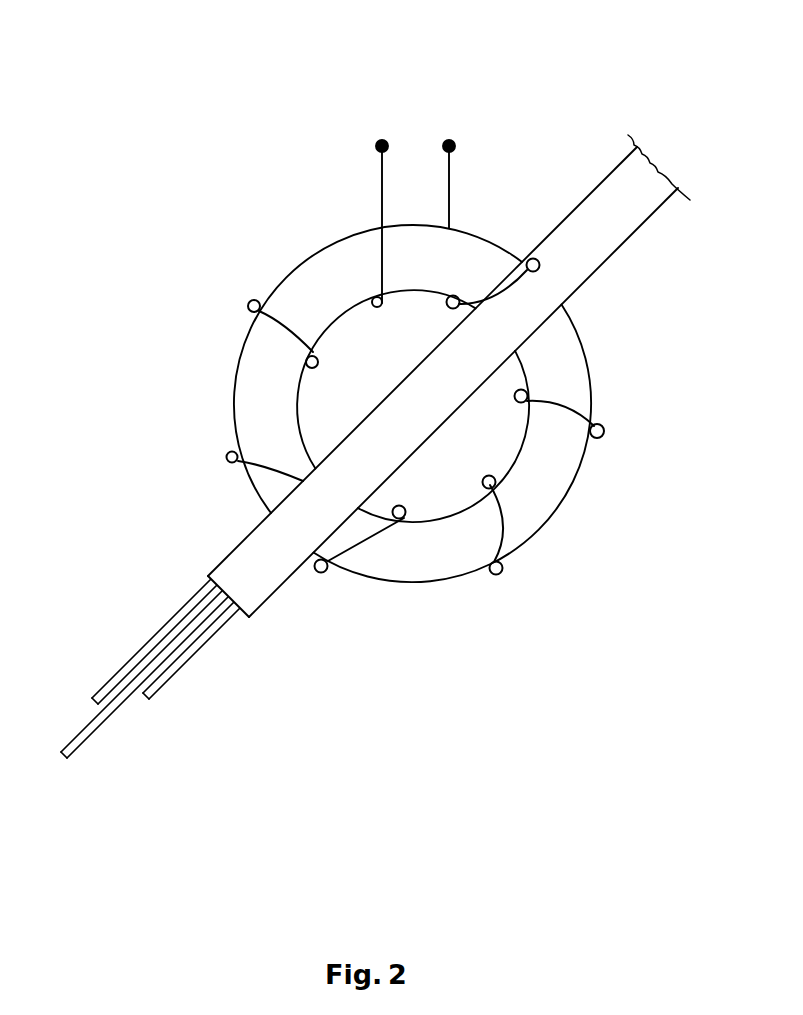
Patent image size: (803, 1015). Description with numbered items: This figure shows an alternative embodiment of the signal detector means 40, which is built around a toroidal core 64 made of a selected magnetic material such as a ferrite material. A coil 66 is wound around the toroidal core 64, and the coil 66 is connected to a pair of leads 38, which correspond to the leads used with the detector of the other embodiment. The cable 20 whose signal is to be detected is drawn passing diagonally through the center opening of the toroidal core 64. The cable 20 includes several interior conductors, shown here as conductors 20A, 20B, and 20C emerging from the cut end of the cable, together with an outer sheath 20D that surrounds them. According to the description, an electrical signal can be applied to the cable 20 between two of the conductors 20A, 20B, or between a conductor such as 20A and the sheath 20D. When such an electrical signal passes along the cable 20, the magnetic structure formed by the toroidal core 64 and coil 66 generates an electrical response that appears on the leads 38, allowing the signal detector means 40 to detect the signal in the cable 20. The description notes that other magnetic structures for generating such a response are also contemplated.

The cable 20 is at (367, 487).
The interior conductor 20A is at (107, 695).
The interior conductor 20B is at (170, 687).
The interior conductor 20C is at (80, 748).
The sheath 20D is at (280, 575).
The leads 38 is at (383, 135).
The signal detector means 40 is at (442, 308).
The toroidal core 64 is at (533, 537).
The coil 66 is at (562, 403).